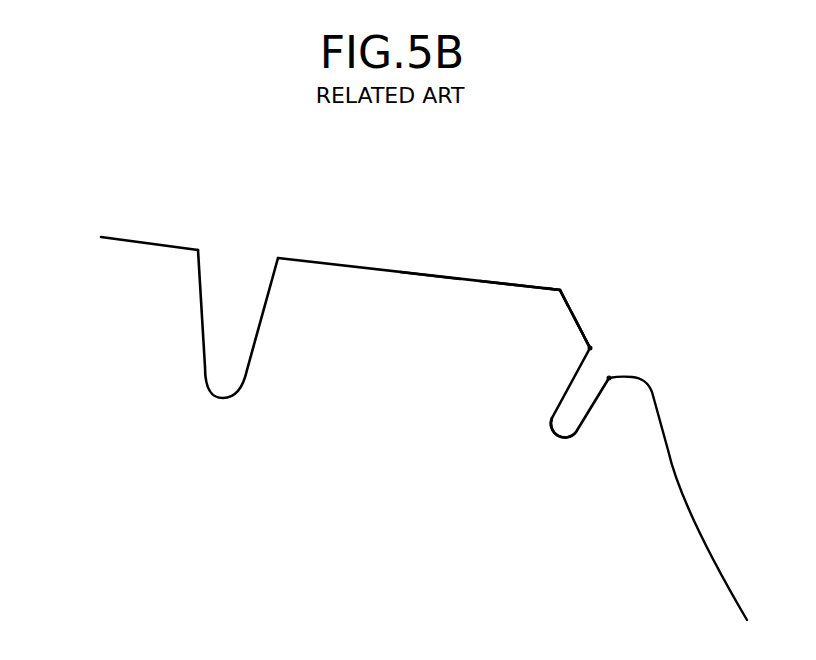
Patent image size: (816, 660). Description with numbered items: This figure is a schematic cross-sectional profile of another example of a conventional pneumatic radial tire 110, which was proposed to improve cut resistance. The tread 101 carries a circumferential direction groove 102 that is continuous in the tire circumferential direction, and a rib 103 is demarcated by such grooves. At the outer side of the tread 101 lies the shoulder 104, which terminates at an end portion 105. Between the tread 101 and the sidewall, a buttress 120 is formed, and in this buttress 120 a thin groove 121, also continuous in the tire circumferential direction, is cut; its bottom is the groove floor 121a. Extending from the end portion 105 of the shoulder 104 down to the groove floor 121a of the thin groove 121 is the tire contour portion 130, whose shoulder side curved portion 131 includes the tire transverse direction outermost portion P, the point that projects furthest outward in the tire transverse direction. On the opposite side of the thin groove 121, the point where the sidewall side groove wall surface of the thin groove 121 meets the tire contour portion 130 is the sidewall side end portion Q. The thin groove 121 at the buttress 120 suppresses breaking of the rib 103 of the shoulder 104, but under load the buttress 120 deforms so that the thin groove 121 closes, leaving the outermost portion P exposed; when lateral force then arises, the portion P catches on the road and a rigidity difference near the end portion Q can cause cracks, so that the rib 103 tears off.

The pneumatic radial tire 110 is at (50, 157).
The tread 101 is at (330, 234).
The circumferential direction groove 102 is at (231, 293).
The rib 103 is at (137, 258).
The shoulder 104 is at (501, 252).
The end portion 105 is at (549, 266).
The tire contour portion 130 is at (580, 293).
The shoulder side curved portion 131 is at (557, 341).
The buttress 120 is at (668, 381).
The thin groove 121 is at (577, 397).
The groove floor 121a is at (555, 437).
The tire transverse direction outermost portion P is at (592, 346).
The sidewall side end portion Q is at (610, 382).